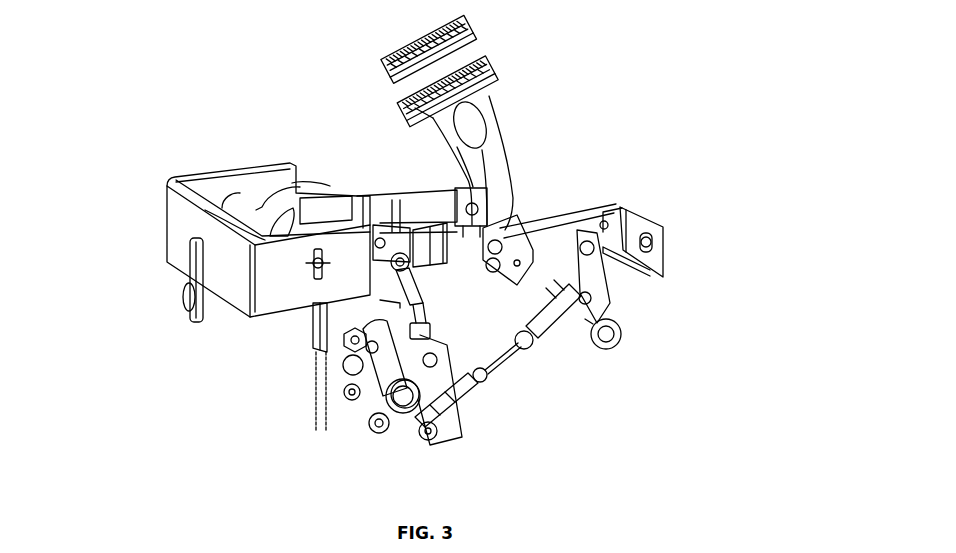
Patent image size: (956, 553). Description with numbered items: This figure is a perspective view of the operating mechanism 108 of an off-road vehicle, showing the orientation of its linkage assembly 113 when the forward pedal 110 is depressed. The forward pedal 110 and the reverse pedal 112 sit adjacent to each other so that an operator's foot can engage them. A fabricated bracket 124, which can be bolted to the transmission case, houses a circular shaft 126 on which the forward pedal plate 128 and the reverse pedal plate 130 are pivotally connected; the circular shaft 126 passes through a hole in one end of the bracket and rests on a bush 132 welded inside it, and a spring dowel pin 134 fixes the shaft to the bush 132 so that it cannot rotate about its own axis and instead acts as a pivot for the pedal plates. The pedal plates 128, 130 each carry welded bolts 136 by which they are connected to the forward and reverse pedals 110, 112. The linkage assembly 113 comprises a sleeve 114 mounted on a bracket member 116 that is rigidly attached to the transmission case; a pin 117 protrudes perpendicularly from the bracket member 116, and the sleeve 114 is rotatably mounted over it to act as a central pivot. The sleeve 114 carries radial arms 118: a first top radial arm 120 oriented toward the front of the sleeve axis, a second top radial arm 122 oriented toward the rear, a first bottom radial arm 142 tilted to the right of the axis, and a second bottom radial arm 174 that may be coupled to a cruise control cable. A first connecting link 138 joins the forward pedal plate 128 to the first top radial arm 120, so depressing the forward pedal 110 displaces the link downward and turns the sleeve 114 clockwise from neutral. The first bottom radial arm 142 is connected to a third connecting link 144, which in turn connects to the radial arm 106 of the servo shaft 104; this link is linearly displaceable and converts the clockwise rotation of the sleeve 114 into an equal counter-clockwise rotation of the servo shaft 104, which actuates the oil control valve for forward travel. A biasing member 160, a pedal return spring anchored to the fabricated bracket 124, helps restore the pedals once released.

The servo shaft 104 is at (614, 340).
The radial arm 106 is at (592, 313).
The operating mechanism 108 is at (544, 354).
The forward pedal 110 is at (446, 37).
The reverse pedal 112 is at (474, 70).
The linkage assembly 113 is at (487, 348).
The sleeve 114 is at (367, 374).
The bracket member 116 is at (340, 361).
The pin 117 is at (414, 426).
The radial arms 118 is at (338, 388).
The first top radial arm 120 is at (446, 335).
The second top radial arm 122 is at (347, 377).
The fabricated bracket 124 is at (180, 210).
The circular shaft 126 is at (257, 206).
The forward pedal plate 128 is at (313, 213).
The reverse pedal plate 130 is at (492, 229).
The bush 132 is at (284, 228).
The spring dowel pin 134 is at (311, 262).
The bolts 136 is at (500, 241).
The first connecting link 138 is at (433, 311).
The first bottom radial arm 142 is at (398, 415).
The third connecting link 144 is at (492, 368).
The biasing member 160 is at (218, 308).
The second bottom radial arm 174 is at (370, 398).